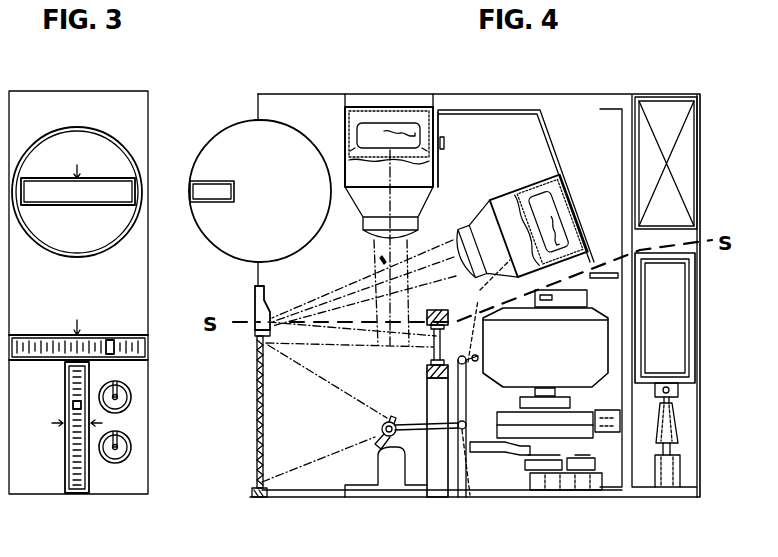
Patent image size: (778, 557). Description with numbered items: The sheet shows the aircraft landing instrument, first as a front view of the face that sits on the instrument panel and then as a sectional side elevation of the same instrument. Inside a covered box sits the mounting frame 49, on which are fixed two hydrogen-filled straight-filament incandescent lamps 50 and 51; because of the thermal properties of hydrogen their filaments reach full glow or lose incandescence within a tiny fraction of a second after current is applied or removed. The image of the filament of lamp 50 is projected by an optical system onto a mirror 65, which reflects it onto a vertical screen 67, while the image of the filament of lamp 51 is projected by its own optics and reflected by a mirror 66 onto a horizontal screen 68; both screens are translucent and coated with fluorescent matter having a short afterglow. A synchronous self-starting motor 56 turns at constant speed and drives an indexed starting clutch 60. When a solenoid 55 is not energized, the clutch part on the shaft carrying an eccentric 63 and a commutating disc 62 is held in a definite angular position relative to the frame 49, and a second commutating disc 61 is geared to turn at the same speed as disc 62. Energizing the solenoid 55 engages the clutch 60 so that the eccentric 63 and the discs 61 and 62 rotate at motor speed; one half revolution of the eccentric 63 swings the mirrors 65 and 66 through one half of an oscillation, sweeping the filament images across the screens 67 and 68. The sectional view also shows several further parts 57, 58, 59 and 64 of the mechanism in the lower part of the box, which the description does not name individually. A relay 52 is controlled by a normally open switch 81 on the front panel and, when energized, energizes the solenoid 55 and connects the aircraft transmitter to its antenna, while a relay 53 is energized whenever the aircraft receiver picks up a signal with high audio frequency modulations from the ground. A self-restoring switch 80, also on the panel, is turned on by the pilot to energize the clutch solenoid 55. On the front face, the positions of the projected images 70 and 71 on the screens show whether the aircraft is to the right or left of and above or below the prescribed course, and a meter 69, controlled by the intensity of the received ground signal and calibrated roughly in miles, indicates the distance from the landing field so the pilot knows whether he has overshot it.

In FIG. 4, the mounting frame 49 is at (497, 98).
In FIG. 4, the lamp 50 is at (390, 133).
In FIG. 4, the lamp 51 is at (544, 203).
In FIG. 4, the relay 52 is at (670, 122).
In FIG. 4, the relay 53 is at (678, 95).
In FIG. 4, the solenoid 55 is at (672, 340).
In FIG. 4, the synchronous self-starting motor 56 is at (593, 338).
In FIG. 4, the motor block 57 is at (600, 404).
In FIG. 4, the funnel member 58 is at (658, 430).
In FIG. 4, the base support 59 is at (670, 443).
In FIG. 4, the indexed starting clutch 60 is at (568, 426).
In FIG. 4, the commutating disc 61 is at (585, 470).
In FIG. 4, the commutating disc 62 is at (540, 466).
In FIG. 4, the eccentric 63 is at (528, 445).
In FIG. 4, the link bar 64 is at (467, 455).
In FIG. 4, the mirror 65 is at (375, 440).
In FIG. 4, the mirror 66 is at (432, 332).
In FIG. 3, the vertical screen 67 is at (70, 451).
In FIG. 4, the vertical screen 67 is at (255, 418).
In FIG. 3, the horizontal screen 68 is at (128, 342).
In FIG. 4, the horizontal screen 68 is at (254, 346).
In FIG. 3, the meter 69 is at (110, 160).
In FIG. 4, the meter 69 is at (277, 150).
In FIG. 3, the projected image 70 is at (111, 339).
In FIG. 3, the projected image 71 is at (73, 405).
In FIG. 3, the switch 80 is at (126, 399).
In FIG. 3, the switch 81 is at (126, 450).